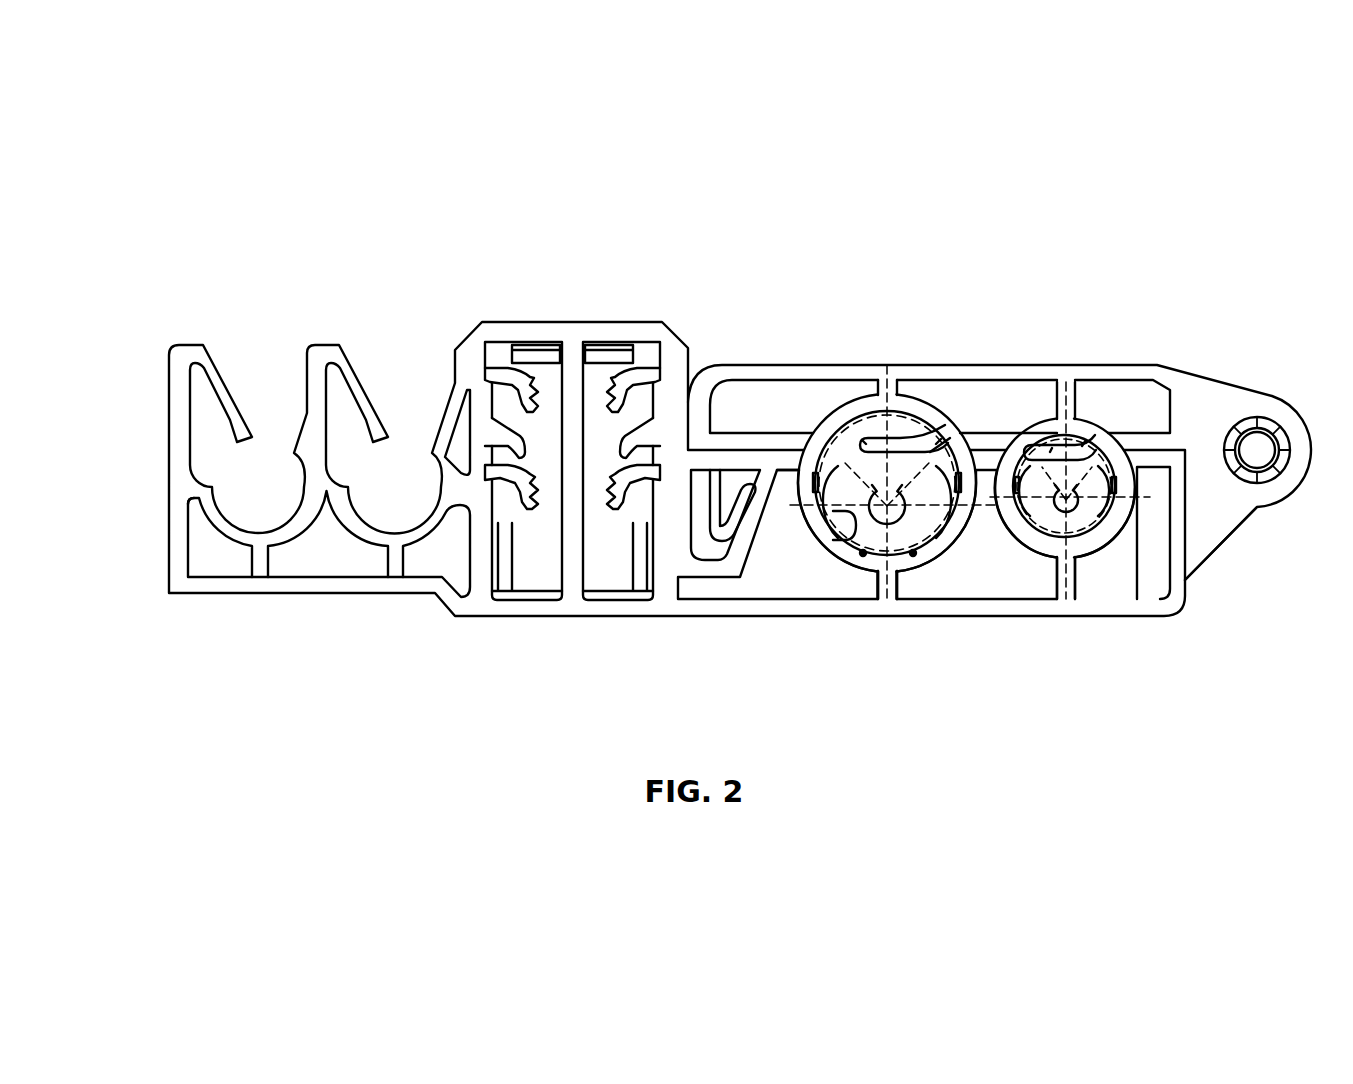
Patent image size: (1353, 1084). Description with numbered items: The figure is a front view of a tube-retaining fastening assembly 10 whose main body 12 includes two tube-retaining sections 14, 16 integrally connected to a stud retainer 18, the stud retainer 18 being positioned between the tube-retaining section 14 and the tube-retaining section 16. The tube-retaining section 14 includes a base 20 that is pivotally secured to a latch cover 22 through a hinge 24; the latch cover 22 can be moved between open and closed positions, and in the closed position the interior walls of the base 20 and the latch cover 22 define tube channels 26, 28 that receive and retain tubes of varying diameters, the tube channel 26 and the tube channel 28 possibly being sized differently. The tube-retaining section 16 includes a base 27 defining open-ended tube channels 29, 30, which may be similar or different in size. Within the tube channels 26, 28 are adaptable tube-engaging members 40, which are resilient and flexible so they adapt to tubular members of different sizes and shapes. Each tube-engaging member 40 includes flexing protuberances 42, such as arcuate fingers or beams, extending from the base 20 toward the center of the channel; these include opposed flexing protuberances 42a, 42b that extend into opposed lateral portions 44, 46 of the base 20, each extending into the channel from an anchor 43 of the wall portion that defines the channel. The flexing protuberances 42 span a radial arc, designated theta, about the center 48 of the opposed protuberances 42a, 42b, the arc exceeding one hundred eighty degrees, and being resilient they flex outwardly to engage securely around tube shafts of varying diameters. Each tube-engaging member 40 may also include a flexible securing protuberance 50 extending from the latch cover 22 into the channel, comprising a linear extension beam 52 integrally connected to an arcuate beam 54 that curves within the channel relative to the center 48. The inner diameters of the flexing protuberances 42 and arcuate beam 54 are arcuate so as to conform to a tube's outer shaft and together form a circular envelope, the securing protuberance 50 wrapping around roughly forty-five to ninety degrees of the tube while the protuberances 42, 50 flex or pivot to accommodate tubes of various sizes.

The tube-retaining fastening assembly 10 is at (174, 236).
The main body 12 is at (205, 585).
The tube-retaining section 14 is at (1098, 628).
The tube-retaining section 16 is at (281, 350).
The stud retainer 18 is at (497, 314).
The base 20 is at (908, 605).
The latch cover 22 is at (1197, 376).
The hinge 24 is at (1257, 452).
The tube channel 26 is at (864, 446).
The base 27 is at (250, 586).
The tube channel 28 is at (1073, 432).
The tube channel 29 is at (238, 498).
The tube channel 30 is at (385, 513).
The adaptable tube-engaging member 40 is at (840, 562).
The flexing protuberance 42 is at (822, 465).
The opposed flexing protuberance 42a is at (823, 528).
The opposed flexing protuberance 42b is at (938, 545).
The anchor 43 is at (857, 580).
The lateral portion 44 is at (840, 542).
The lateral portion 46 is at (900, 574).
The center 48 is at (890, 480).
The flexible securing protuberance 50 is at (875, 437).
The extension beam 52 is at (940, 440).
The arcuate beam 54 is at (864, 442).